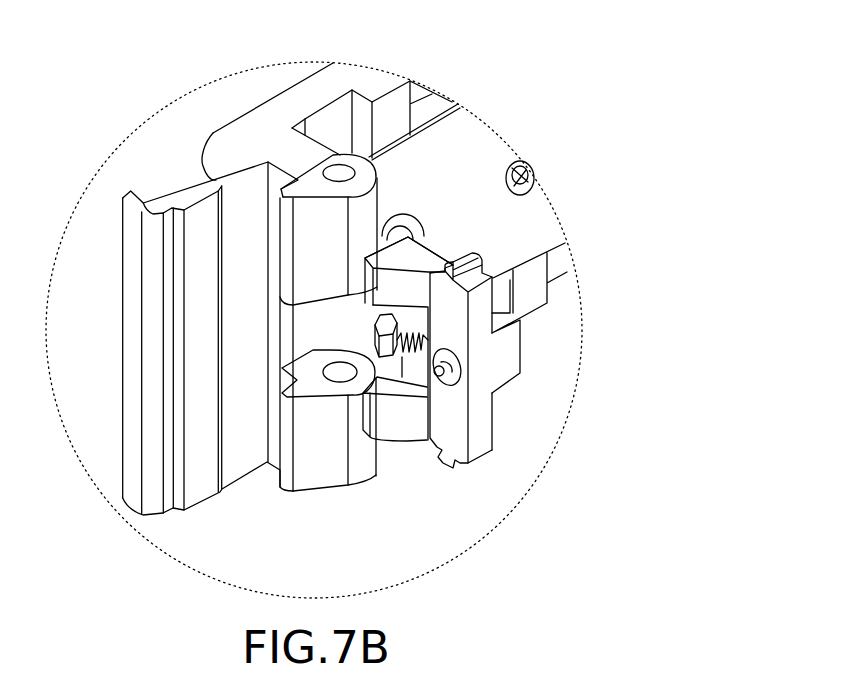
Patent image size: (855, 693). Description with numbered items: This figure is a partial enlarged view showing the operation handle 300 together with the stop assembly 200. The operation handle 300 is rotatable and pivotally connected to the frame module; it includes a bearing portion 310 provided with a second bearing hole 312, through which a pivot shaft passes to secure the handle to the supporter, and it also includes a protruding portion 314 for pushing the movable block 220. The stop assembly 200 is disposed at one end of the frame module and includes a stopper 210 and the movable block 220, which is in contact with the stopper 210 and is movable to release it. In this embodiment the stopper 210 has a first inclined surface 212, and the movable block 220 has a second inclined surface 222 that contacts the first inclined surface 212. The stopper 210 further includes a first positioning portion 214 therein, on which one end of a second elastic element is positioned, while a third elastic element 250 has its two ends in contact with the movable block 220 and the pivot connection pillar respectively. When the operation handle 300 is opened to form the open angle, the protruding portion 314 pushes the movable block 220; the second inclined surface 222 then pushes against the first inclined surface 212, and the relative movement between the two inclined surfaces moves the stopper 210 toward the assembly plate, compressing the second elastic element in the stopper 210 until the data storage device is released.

The stop assembly 200 is at (492, 312).
The stopper 210 is at (512, 355).
The first inclined surface 212 is at (496, 267).
The first positioning portion 214 is at (460, 377).
The movable block 220 is at (403, 283).
The second inclined surface 222 is at (435, 245).
The third elastic element 250 is at (400, 357).
The operation handle 300 is at (253, 130).
The bearing portion 310 is at (367, 172).
The second bearing hole 312 is at (340, 173).
The protruding portion 314 is at (287, 250).